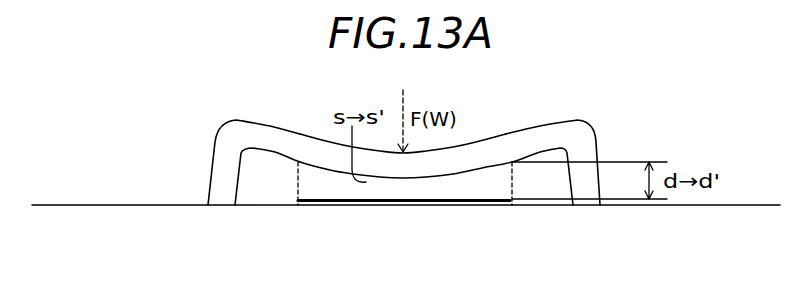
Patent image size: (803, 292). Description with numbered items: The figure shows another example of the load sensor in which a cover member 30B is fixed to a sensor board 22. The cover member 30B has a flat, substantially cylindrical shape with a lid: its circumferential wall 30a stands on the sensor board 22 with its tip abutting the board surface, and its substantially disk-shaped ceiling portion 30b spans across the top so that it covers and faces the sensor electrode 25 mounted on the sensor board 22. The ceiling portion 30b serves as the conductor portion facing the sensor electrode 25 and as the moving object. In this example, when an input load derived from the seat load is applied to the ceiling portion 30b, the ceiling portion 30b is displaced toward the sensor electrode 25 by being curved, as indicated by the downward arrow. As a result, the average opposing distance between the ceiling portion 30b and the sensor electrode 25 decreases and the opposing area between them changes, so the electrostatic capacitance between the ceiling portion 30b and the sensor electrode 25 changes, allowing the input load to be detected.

The sensor board 22 is at (100, 205).
The sensor electrode 25 is at (477, 199).
The cover member 30B is at (438, 177).
The circumferential wall 30a is at (216, 164).
The ceiling portion 30b is at (325, 159).